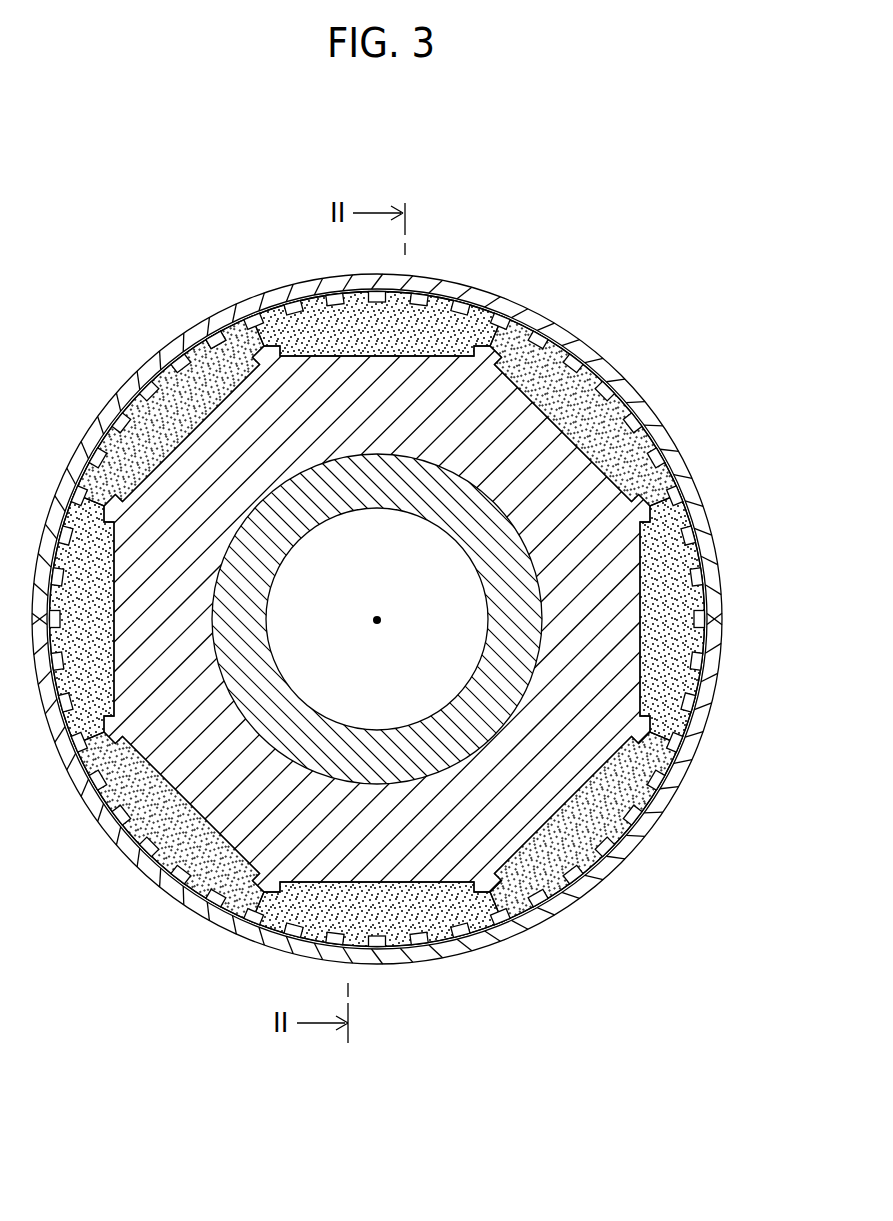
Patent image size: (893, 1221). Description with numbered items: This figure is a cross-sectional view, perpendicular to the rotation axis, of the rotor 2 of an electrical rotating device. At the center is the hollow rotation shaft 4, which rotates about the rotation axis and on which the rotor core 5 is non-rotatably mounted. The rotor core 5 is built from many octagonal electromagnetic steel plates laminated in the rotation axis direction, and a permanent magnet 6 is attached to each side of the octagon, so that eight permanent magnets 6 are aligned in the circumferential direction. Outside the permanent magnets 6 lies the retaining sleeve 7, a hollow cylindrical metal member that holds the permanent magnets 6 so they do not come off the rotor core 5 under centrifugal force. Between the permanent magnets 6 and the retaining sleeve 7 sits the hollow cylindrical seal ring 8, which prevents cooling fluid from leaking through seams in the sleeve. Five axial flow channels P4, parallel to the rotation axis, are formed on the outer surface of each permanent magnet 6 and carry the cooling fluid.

The rotor 2 is at (446, 557).
The rotation shaft 4 is at (440, 757).
The rotor core 5 is at (557, 777).
The permanent magnets 6 is at (714, 620).
The retaining sleeve 7 is at (674, 447).
The seal ring 8 is at (658, 438).
The axial flow channels P4 is at (210, 318).